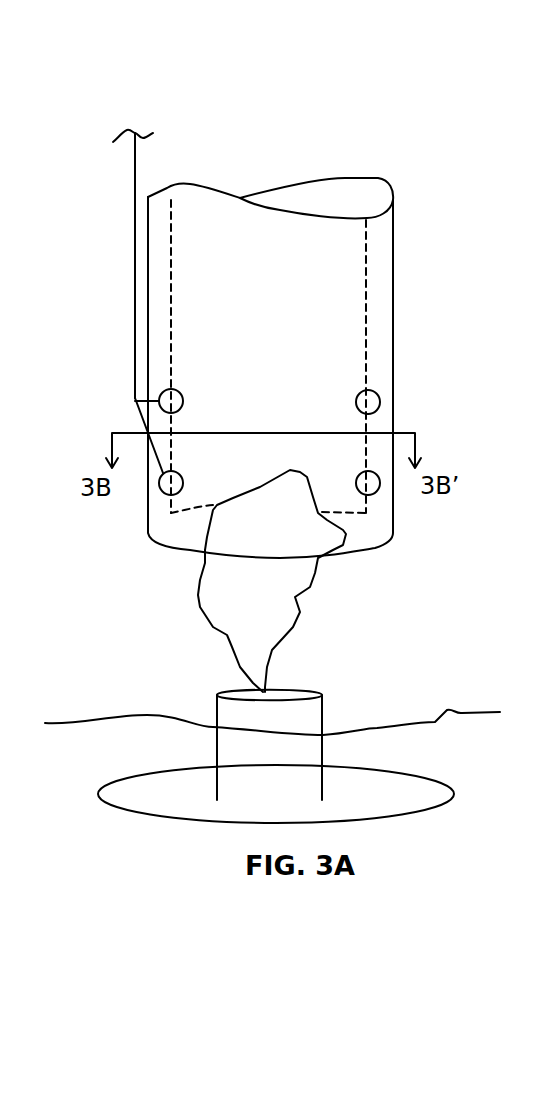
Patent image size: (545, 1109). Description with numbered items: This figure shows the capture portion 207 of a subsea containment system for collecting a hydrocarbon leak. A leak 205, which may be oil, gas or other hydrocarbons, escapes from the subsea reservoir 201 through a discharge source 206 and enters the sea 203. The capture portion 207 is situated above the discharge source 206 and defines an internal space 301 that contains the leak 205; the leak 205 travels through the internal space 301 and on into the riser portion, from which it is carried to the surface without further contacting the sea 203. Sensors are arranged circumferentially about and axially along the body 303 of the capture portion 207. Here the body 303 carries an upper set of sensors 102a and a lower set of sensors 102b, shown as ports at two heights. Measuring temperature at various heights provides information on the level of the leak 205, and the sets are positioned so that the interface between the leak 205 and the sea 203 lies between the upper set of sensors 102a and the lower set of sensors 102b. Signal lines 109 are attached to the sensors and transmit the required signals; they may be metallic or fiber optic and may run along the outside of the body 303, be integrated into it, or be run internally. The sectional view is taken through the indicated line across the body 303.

The signal lines 109 is at (135, 188).
The capture portion 207 is at (430, 223).
The internal space 301 is at (263, 258).
The body 303 is at (380, 305).
The upper set of sensors 102a is at (380, 398).
The lower set of sensors 102b is at (382, 492).
The sea 203 is at (442, 616).
The leak 205 is at (192, 595).
The discharge source 206 is at (323, 693).
The subsea reservoir 201 is at (430, 810).